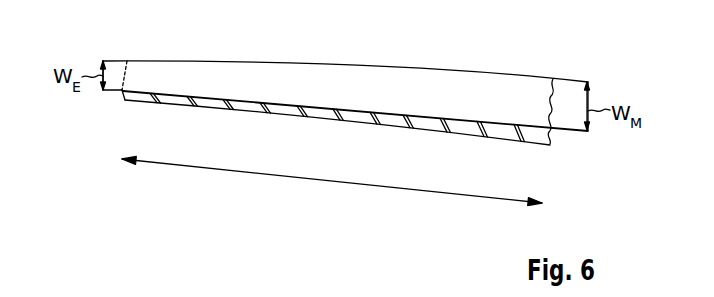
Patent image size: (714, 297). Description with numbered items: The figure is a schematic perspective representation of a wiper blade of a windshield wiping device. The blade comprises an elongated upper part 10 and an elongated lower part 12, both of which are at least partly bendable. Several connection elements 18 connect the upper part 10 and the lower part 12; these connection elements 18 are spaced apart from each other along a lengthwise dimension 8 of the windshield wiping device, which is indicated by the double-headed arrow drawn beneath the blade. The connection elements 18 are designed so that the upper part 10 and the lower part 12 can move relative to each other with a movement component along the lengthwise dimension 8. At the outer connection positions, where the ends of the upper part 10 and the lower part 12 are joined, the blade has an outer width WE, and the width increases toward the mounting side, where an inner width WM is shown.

The elongated upper part 10 is at (440, 69).
The elongated lower part 12 is at (470, 133).
The connection elements 18 is at (262, 108).
The lengthwise dimension 8 is at (325, 180).